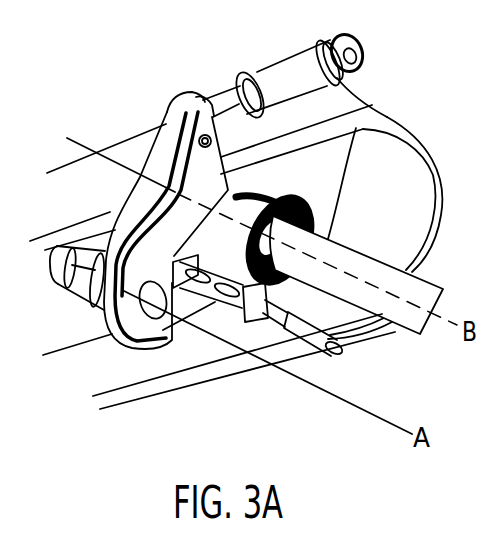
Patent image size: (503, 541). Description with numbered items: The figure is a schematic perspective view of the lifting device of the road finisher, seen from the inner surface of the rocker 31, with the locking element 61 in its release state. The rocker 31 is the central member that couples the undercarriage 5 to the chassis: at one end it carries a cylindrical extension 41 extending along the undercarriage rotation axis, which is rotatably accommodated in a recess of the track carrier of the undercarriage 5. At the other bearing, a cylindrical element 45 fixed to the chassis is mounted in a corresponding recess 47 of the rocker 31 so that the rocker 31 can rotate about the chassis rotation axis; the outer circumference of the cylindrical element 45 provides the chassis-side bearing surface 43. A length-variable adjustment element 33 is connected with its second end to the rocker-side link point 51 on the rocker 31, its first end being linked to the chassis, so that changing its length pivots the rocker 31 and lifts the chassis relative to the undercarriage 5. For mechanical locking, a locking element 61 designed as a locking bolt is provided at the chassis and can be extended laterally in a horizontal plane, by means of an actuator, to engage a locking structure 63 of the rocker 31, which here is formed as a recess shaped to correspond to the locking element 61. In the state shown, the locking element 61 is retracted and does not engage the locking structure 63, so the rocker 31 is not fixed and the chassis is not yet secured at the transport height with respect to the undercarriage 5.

The undercarriage 5 is at (152, 404).
The rocker 31 is at (146, 187).
The length-variable adjustment element 33 is at (270, 80).
The cylindrical extension 41 is at (68, 305).
The chassis-side bearing surface 43 is at (338, 207).
The cylindrical element 45 is at (433, 288).
The recess 47 is at (288, 198).
The rocker-side link point 51 is at (194, 112).
The locking element 61 is at (200, 290).
The locking structure 63 is at (177, 258).